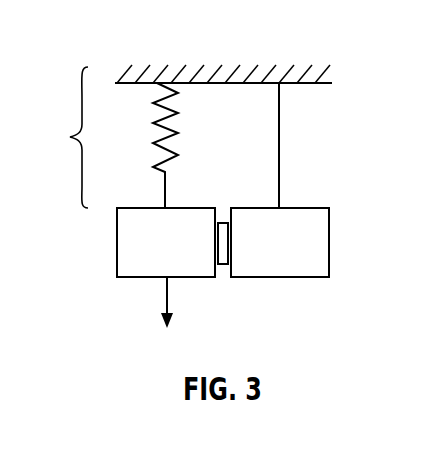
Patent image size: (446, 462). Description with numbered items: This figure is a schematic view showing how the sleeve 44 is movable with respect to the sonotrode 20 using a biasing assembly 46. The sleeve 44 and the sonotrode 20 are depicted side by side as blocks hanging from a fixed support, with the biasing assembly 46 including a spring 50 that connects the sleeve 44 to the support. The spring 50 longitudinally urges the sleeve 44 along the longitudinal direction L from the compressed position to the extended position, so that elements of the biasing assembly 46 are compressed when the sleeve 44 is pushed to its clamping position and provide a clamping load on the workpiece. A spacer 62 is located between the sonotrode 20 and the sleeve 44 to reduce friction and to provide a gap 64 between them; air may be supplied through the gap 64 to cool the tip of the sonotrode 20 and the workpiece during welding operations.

The biasing assembly 46 is at (63, 137).
The spring 50 is at (153, 143).
The sleeve 44 is at (180, 256).
The sonotrode 20 is at (293, 256).
The spacer 62 is at (218, 266).
The gap 64 is at (225, 198).
The longitudinal direction L is at (163, 294).